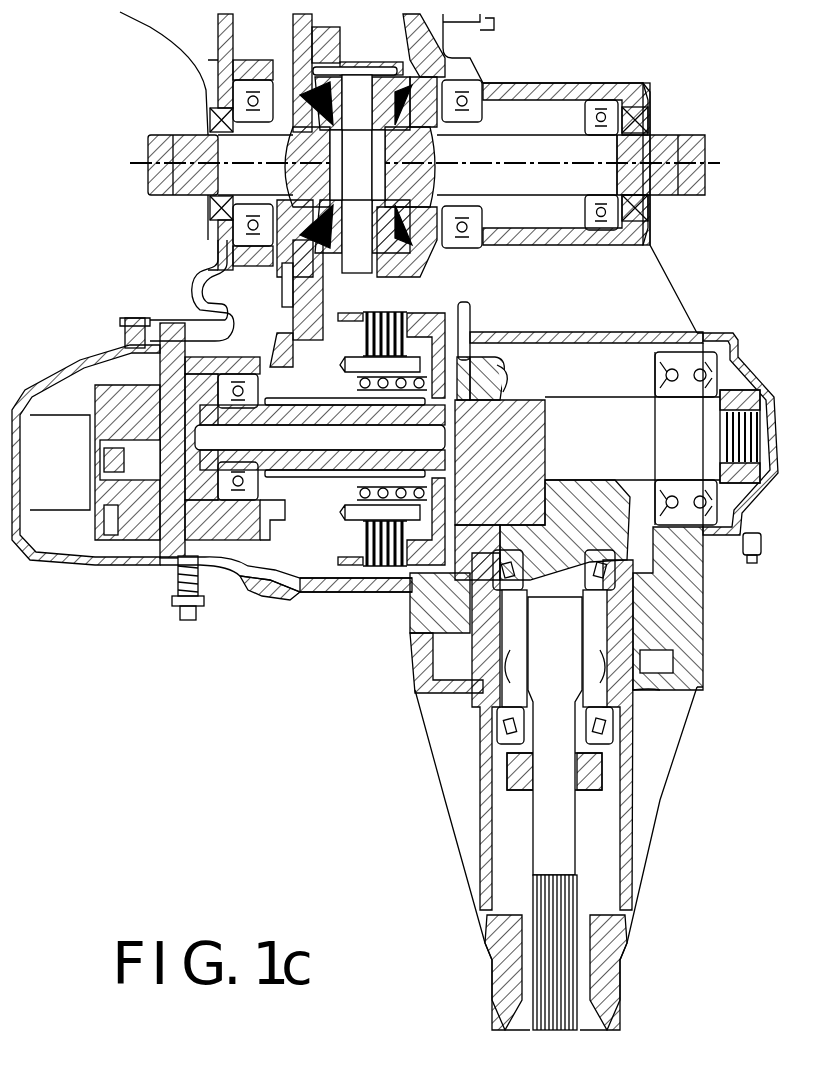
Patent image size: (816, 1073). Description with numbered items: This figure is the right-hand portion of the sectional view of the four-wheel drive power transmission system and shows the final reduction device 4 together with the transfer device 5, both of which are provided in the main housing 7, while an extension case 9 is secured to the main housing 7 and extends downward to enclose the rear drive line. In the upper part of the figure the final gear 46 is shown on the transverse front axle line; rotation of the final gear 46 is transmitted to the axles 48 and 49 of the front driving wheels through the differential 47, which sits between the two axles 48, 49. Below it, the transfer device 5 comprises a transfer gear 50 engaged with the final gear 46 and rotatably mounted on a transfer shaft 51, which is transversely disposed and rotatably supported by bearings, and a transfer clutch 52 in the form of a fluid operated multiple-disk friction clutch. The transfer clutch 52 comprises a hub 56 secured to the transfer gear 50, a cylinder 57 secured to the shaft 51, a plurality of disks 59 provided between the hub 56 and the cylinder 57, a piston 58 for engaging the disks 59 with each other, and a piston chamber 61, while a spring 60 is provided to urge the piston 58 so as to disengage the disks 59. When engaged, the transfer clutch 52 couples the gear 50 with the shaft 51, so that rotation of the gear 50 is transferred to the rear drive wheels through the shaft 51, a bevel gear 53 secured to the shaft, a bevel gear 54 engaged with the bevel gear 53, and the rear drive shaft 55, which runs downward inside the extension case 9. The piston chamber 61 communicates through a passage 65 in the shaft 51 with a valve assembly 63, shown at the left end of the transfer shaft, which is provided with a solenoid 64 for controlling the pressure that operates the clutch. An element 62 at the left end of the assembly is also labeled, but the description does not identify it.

The final reduction device 4 is at (531, 124).
The transfer device 5 is at (581, 356).
The main housing 7 is at (225, 24).
The extension case 9 is at (627, 887).
The final gear 46 is at (285, 325).
The differential 47 is at (395, 262).
The axle 48 is at (187, 143).
The axle 49 is at (667, 150).
The transfer gear 50 is at (285, 368).
The transfer shaft 51 is at (543, 425).
The transfer clutch 52 is at (459, 338).
The bevel gear 53 is at (502, 388).
The bevel gear 54 is at (617, 503).
The rear drive shaft 55 is at (556, 852).
The hub 56 is at (357, 520).
The cylinder 57 is at (413, 340).
The piston 58 is at (463, 352).
The disks 59 is at (372, 312).
The spring 60 is at (360, 377).
The piston chamber 61 is at (447, 518).
The cover 62 is at (42, 382).
The valve assembly 63 is at (108, 490).
The solenoid 64 is at (47, 460).
The passage 65 is at (300, 437).